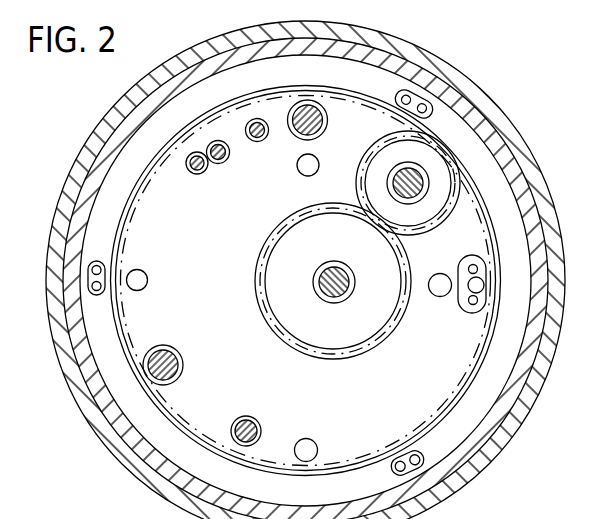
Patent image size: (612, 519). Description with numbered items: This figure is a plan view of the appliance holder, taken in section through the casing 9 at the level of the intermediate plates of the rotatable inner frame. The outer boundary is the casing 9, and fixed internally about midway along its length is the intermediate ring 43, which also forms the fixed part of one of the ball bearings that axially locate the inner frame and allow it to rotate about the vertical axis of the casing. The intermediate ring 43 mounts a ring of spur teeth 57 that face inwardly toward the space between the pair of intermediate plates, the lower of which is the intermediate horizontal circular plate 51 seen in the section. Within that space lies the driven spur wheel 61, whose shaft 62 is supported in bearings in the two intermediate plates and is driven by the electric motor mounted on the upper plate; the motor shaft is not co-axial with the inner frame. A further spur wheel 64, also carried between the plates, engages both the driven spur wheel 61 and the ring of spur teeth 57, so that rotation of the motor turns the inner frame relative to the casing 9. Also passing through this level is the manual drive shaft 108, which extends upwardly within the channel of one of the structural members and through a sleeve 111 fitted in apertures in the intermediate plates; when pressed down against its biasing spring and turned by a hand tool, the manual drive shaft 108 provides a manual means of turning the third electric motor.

The casing 9 is at (537, 372).
The intermediate ring 43 is at (538, 321).
The intermediate horizontal circular plate 51 is at (132, 306).
The ring of spur teeth 57 is at (495, 260).
The spur wheel 61 is at (262, 283).
The shaft 62 is at (337, 290).
The further spur wheel 64 is at (436, 222).
The manual drive shaft 108 is at (253, 413).
The sleeve 111 is at (262, 428).